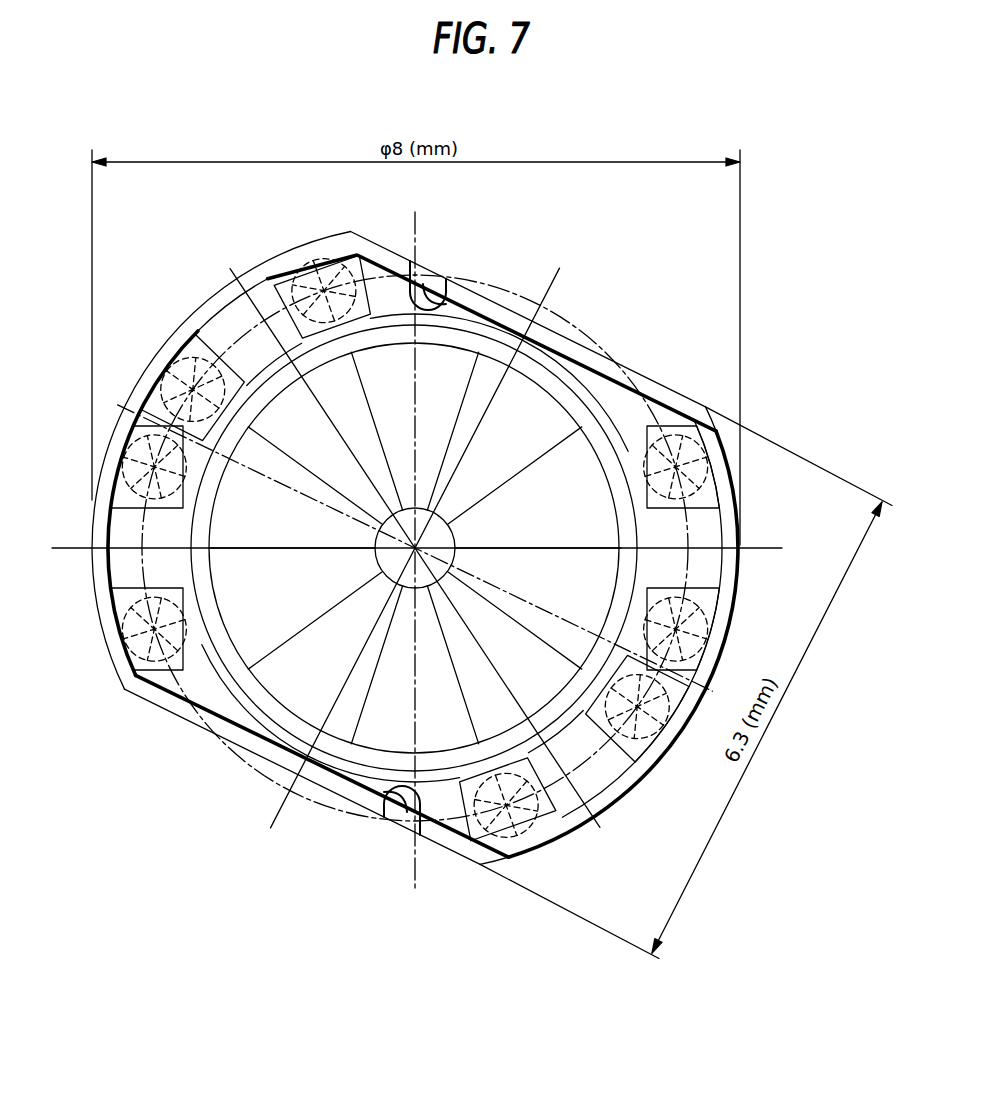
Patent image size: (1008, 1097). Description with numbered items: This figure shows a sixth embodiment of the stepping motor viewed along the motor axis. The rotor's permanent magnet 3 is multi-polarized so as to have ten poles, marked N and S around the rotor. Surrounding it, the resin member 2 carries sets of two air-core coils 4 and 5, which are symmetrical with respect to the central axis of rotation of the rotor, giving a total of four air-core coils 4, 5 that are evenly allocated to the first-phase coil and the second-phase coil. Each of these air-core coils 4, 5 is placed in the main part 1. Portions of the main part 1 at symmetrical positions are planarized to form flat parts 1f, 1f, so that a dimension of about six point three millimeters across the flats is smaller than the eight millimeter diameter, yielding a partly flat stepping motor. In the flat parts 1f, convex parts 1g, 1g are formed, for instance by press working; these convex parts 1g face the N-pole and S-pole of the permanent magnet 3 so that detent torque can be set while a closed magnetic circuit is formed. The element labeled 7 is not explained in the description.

The main part 1 is at (214, 303).
The flat part 1f is at (665, 385).
The convex part 1g is at (420, 290).
The resin member 2 is at (158, 572).
The permanent magnet 3 is at (553, 423).
The air-core coil 4 is at (327, 265).
The air-core coil 5 is at (113, 490).
The shaft 7 is at (422, 512).